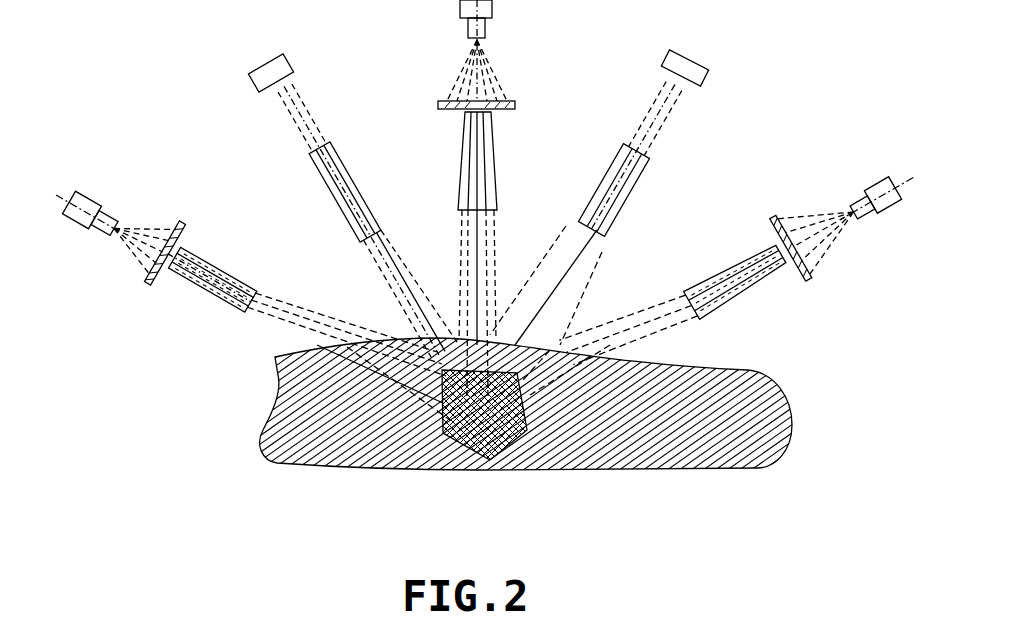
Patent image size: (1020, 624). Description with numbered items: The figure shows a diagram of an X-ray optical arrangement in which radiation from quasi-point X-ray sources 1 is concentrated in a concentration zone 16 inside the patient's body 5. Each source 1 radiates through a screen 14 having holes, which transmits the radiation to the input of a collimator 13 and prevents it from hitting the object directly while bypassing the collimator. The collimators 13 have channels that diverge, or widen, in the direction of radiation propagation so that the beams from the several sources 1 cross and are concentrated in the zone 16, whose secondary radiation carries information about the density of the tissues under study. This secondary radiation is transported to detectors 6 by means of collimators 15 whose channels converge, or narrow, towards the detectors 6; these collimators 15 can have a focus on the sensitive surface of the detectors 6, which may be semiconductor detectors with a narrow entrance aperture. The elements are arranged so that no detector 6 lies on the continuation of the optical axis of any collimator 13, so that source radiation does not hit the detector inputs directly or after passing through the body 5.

The quasi-point X-ray source 1 is at (82, 197).
The patient's body 5 is at (300, 397).
The detector 6 is at (246, 78).
The collimator 13 is at (222, 303).
The screen 14 is at (146, 283).
The collimator 15 is at (312, 165).
The concentration zone 16 is at (443, 433).